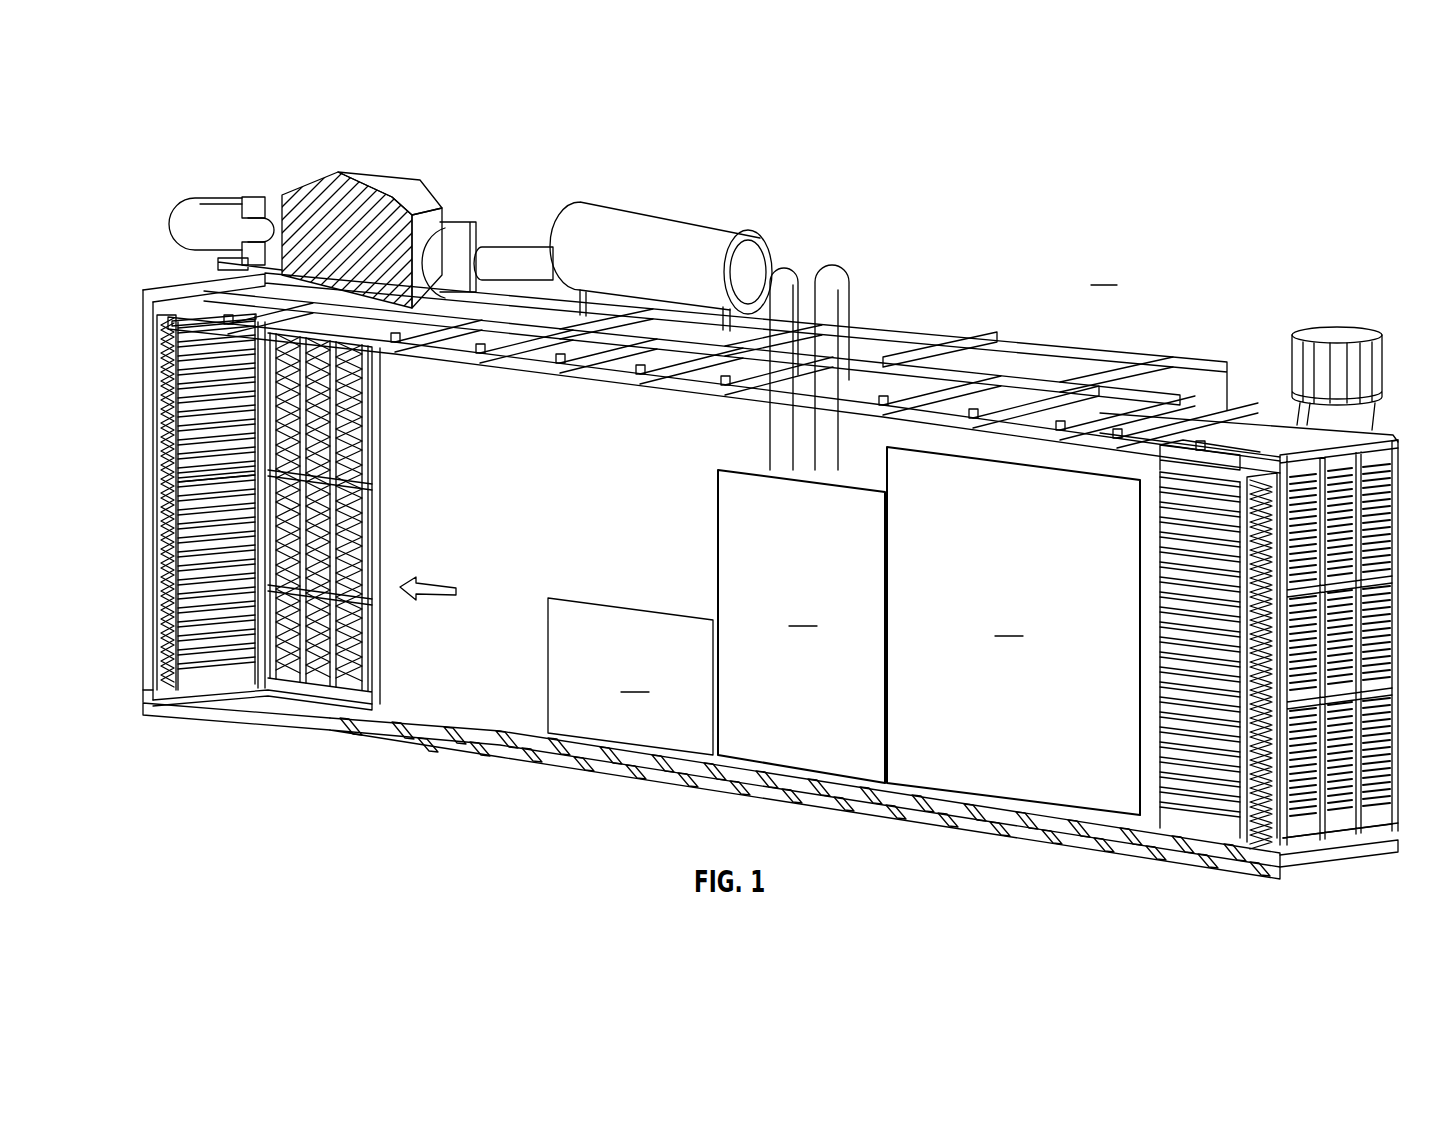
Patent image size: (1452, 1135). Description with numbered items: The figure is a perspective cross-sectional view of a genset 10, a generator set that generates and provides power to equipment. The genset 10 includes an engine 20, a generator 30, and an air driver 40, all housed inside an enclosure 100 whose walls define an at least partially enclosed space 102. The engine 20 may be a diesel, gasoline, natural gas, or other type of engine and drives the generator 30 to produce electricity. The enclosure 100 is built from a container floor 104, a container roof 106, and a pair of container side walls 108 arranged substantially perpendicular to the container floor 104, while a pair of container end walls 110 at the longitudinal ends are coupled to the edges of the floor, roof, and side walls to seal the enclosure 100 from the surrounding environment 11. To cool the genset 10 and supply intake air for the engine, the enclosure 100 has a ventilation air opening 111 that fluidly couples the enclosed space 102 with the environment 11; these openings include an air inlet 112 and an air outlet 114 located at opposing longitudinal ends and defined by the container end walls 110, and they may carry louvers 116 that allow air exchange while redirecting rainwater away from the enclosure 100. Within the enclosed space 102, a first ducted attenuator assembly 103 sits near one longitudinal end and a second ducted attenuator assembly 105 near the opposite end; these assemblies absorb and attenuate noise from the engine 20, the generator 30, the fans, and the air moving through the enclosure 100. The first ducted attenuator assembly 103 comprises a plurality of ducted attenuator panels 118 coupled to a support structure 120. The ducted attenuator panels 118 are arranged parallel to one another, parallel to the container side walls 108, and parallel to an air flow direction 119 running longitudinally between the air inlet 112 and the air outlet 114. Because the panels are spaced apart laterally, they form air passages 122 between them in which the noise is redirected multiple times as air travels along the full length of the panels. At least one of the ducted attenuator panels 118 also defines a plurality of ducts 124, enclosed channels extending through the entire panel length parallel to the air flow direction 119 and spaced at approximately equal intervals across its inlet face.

The genset 10 is at (283, 128).
The environment 11 is at (770, 354).
The engine 20 is at (801, 626).
The generator 30 is at (630, 676).
The air driver 40 is at (1013, 631).
The enclosure 100 is at (930, 375).
The enclosed space 102 is at (405, 362).
The first ducted attenuator assembly 103 is at (243, 707).
The container floor 104 is at (313, 713).
The second ducted attenuator assembly 105 is at (1215, 842).
The container roof 106 is at (1008, 390).
The container side walls 108 is at (540, 377).
The container end walls 110 is at (143, 643).
The ventilation air opening 111 is at (1397, 797).
The air inlet 112 is at (1404, 596).
The air outlet 114 is at (142, 482).
The louvers 116 is at (1377, 817).
The ducted attenuator panels 118 is at (197, 340).
The air flow direction 119 is at (440, 600).
The support structure 120 is at (287, 703).
The air passages 122 is at (292, 370).
The ducts 124 is at (210, 605).